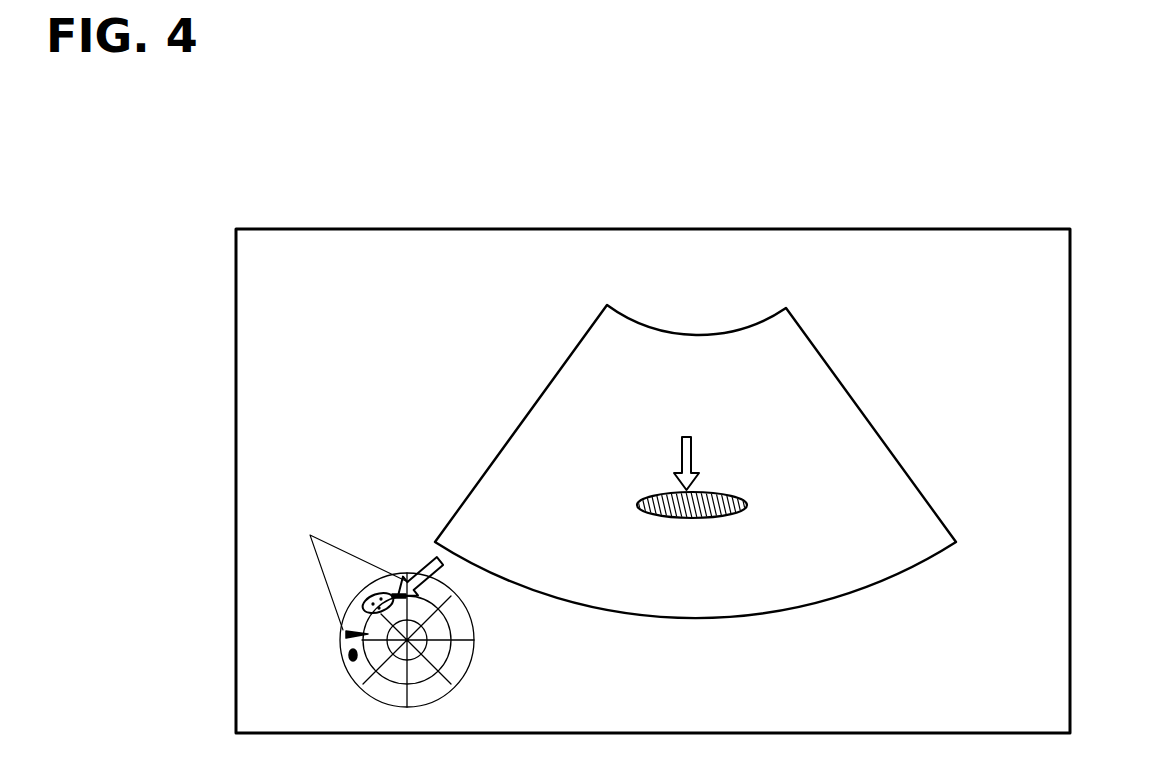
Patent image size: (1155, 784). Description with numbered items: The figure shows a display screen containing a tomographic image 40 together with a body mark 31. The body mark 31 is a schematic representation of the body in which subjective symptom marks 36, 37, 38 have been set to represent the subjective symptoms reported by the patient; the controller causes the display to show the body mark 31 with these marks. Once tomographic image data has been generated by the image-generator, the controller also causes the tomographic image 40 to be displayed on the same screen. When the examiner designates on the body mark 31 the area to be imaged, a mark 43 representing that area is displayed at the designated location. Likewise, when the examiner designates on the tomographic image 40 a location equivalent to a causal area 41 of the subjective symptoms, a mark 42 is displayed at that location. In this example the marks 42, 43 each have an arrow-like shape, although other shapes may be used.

The body mark 31 is at (394, 703).
The subjective symptom mark 36 is at (363, 600).
The subjective symptom mark 37 is at (346, 633).
The subjective symptom mark 38 is at (350, 658).
The tomographic image 40 is at (723, 328).
The causal area 41 is at (688, 520).
The mark 42 is at (695, 460).
The mark representing the area to be imaged 43 is at (432, 580).